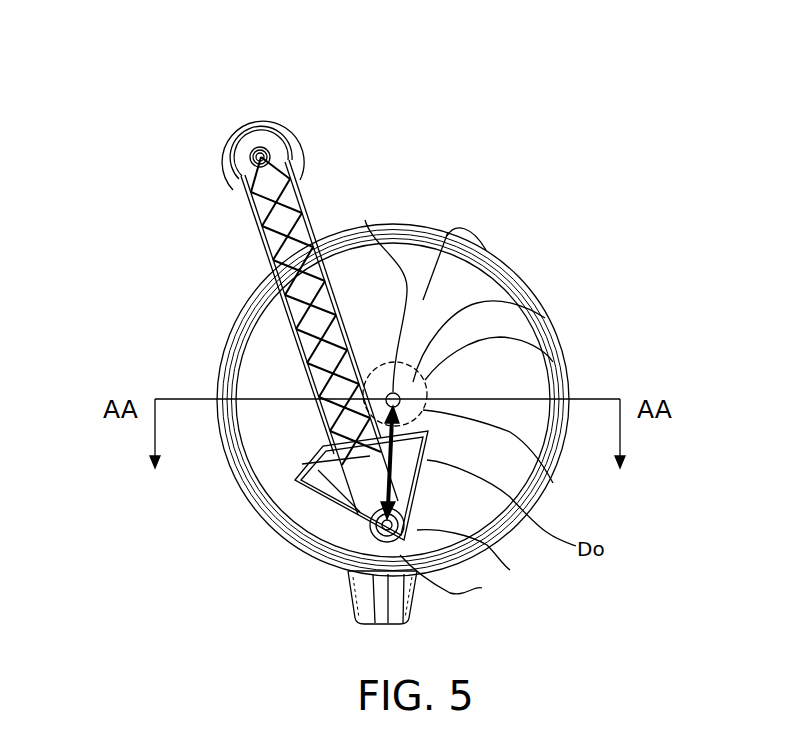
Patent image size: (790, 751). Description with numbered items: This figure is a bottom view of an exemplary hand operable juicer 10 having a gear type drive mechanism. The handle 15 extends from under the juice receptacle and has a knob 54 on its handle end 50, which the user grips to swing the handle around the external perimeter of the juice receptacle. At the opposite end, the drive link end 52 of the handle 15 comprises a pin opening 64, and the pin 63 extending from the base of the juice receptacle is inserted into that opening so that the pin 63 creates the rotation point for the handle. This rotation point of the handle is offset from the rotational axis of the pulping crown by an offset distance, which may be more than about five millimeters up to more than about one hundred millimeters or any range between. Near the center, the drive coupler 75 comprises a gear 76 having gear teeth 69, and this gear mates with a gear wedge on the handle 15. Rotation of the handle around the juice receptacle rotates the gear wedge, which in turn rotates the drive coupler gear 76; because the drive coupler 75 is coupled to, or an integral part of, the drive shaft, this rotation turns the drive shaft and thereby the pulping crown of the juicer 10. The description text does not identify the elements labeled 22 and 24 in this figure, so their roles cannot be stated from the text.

The hand operable juicer 10 is at (441, 174).
The handle 15 is at (255, 238).
The housing rim 22 is at (487, 246).
The mounting flange 24 is at (377, 598).
The handle end 50 is at (200, 170).
The drive link end 52 is at (302, 516).
The knob 54 is at (283, 120).
The pin 63 is at (482, 588).
The pin opening 64 is at (510, 570).
The gear teeth 69 is at (365, 220).
The drive coupler 75 is at (553, 362).
The gear 76 is at (524, 311).